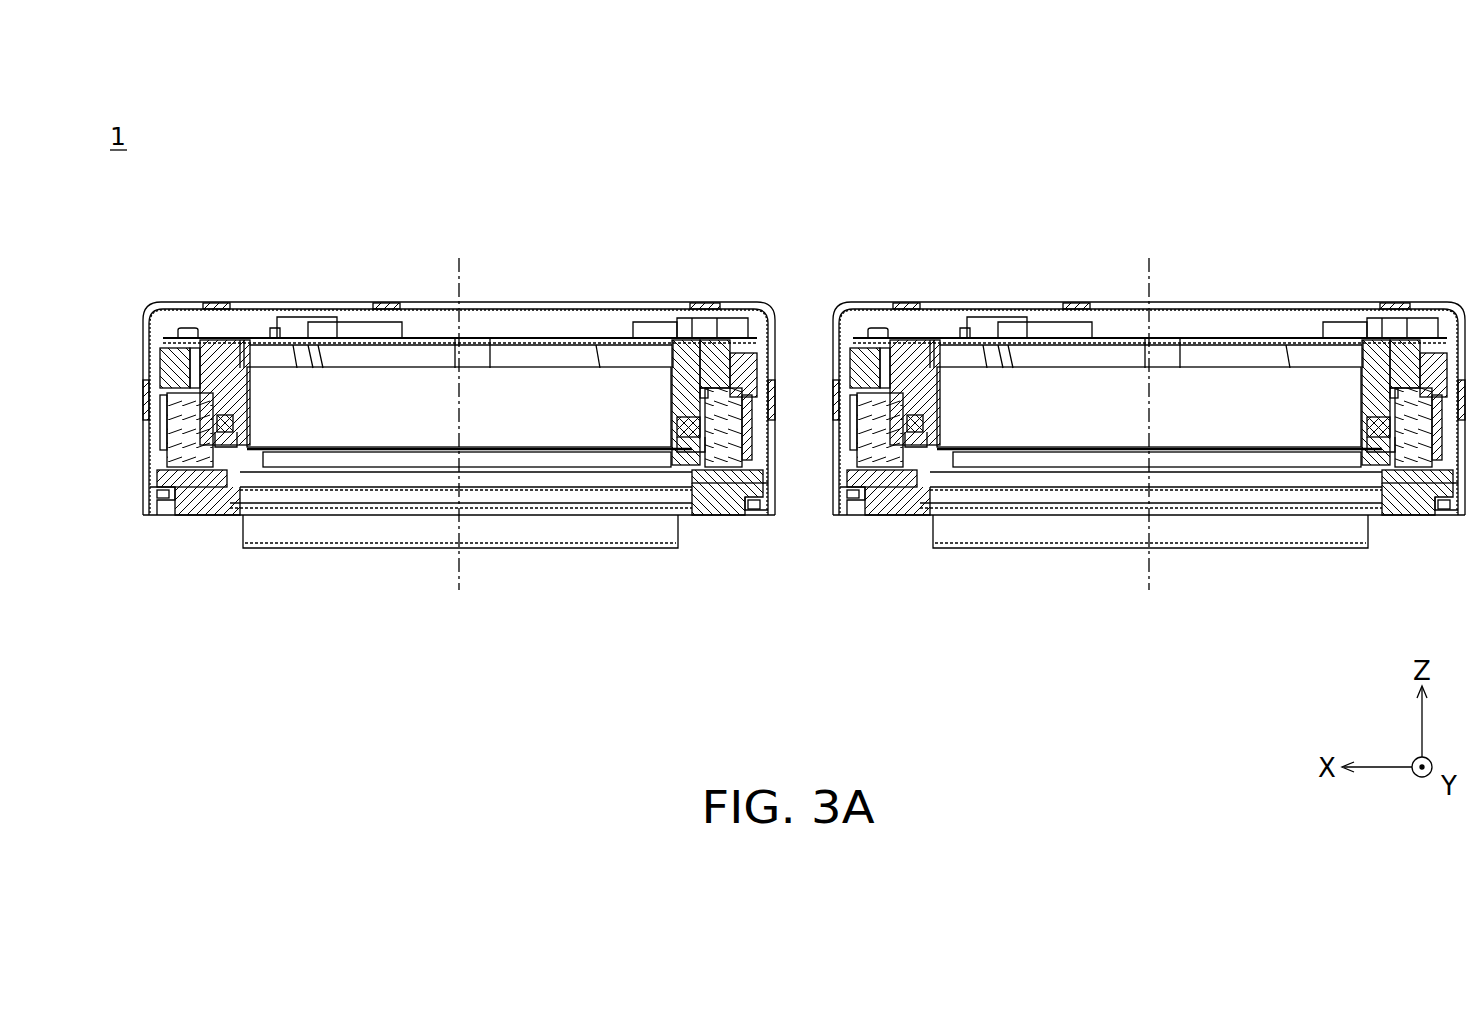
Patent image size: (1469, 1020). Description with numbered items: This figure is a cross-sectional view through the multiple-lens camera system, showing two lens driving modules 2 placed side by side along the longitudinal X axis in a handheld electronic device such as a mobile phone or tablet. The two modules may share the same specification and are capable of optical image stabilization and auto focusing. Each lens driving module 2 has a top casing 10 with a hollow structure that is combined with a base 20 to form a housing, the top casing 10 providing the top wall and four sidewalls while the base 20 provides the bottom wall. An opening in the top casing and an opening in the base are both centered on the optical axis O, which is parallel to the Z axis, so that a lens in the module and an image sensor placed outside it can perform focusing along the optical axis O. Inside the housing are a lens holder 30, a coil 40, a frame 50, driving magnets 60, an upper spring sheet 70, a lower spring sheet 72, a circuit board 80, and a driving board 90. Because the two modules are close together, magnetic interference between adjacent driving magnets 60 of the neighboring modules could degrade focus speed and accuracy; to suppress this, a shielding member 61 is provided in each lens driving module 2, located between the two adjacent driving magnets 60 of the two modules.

The lens driving module 2 is at (346, 300).
The optical axis O is at (802, 246).
The top casing 10 is at (748, 316).
The base 20 is at (202, 500).
The lens holder 30 is at (226, 368).
The coil 40 is at (228, 445).
The frame 50 is at (172, 368).
The magnets 60 is at (158, 420).
The shielding member 61 is at (750, 440).
The upper spring sheet 70 is at (548, 337).
The lower spring sheet 72 is at (565, 462).
The circuit board 80 is at (160, 495).
The driving board 90 is at (757, 505).